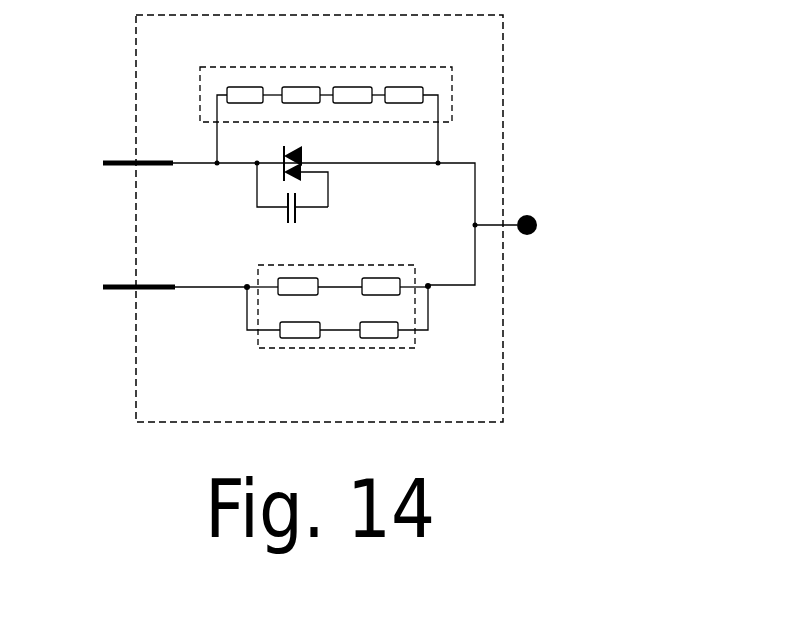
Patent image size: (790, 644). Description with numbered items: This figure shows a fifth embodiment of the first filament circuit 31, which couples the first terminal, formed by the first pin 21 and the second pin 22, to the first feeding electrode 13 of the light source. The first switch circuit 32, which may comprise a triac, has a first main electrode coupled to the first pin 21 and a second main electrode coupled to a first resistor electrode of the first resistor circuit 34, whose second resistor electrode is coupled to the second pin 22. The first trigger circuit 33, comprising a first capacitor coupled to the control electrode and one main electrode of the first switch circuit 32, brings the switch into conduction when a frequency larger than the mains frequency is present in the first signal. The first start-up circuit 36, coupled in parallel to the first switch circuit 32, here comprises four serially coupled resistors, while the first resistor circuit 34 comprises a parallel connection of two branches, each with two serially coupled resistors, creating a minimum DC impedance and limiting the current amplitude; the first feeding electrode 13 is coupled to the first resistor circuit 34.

The first feeding electrode 13 is at (544, 227).
The first pin 21 is at (114, 161).
The second pin 22 is at (115, 284).
The first filament circuit 31 is at (503, 390).
The first switch circuit 32 is at (303, 148).
The first trigger circuit 33 is at (292, 209).
The first resistor circuit 34 is at (340, 348).
The first start-up circuit 36 is at (325, 67).